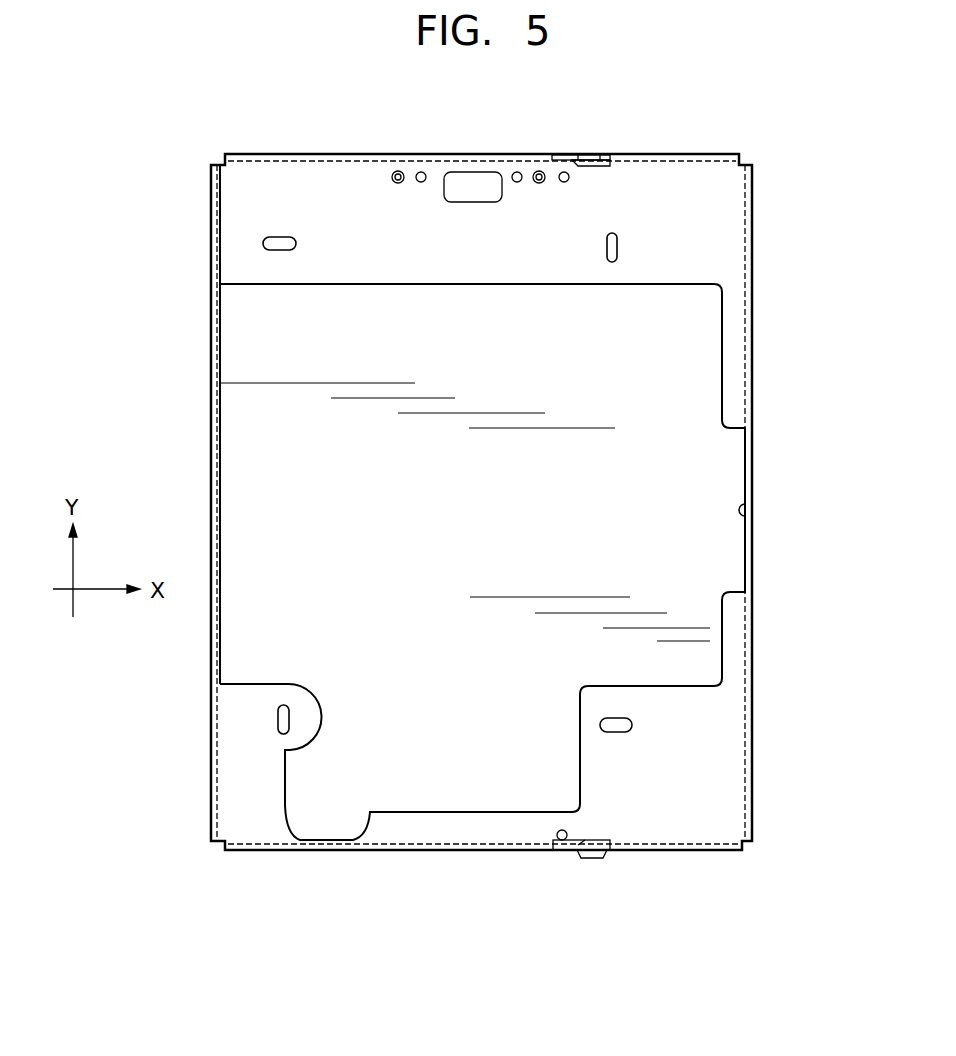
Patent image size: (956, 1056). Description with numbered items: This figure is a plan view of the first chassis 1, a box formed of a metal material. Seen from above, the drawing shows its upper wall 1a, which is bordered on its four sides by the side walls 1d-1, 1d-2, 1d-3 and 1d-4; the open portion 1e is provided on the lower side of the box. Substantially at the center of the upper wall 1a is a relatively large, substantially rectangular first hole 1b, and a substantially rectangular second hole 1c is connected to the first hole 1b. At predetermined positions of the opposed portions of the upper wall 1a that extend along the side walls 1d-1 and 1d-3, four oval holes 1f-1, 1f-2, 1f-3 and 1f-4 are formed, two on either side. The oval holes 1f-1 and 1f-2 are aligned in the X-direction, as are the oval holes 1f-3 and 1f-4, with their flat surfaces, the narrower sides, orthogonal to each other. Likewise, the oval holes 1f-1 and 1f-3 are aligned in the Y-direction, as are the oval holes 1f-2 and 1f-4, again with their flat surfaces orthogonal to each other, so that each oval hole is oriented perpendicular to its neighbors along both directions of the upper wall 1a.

The first chassis 1 is at (663, 142).
The upper wall 1a is at (692, 205).
The first hole 1b is at (710, 308).
The second hole 1c is at (523, 800).
The side wall 1d-1 is at (407, 154).
The side wall 1d-2 is at (211, 355).
The side wall 1d-3 is at (400, 852).
The side wall 1d-4 is at (752, 213).
The open portion 1e is at (745, 520).
The oval hole 1f-1 is at (263, 243).
The oval hole 1f-2 is at (614, 250).
The oval hole 1f-3 is at (278, 718).
The oval hole 1f-4 is at (632, 722).